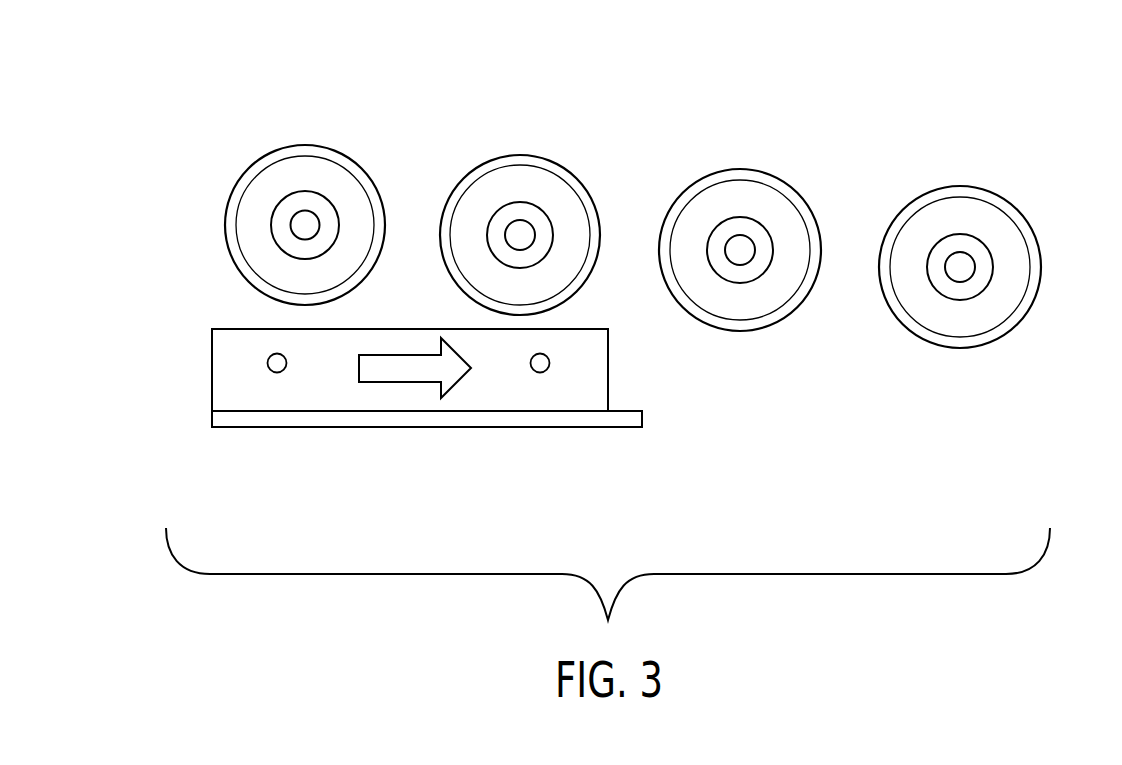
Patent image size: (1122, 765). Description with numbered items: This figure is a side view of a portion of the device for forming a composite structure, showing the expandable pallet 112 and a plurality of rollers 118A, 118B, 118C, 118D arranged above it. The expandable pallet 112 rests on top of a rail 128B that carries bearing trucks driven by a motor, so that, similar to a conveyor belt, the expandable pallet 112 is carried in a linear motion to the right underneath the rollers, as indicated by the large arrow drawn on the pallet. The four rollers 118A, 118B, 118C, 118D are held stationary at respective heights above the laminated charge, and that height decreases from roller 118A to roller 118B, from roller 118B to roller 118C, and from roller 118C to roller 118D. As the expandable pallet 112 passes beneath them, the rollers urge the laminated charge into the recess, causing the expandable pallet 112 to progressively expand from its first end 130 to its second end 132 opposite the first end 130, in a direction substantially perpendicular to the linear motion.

The roller 118A is at (290, 118).
The roller 118B is at (502, 130).
The roller 118C is at (718, 145).
The roller 118D is at (937, 148).
The first end of the expandable pallet 130 is at (624, 386).
The second end of the expandable pallet 132 is at (196, 382).
The rail 128B is at (252, 428).
The expandable pallet 112 is at (327, 401).